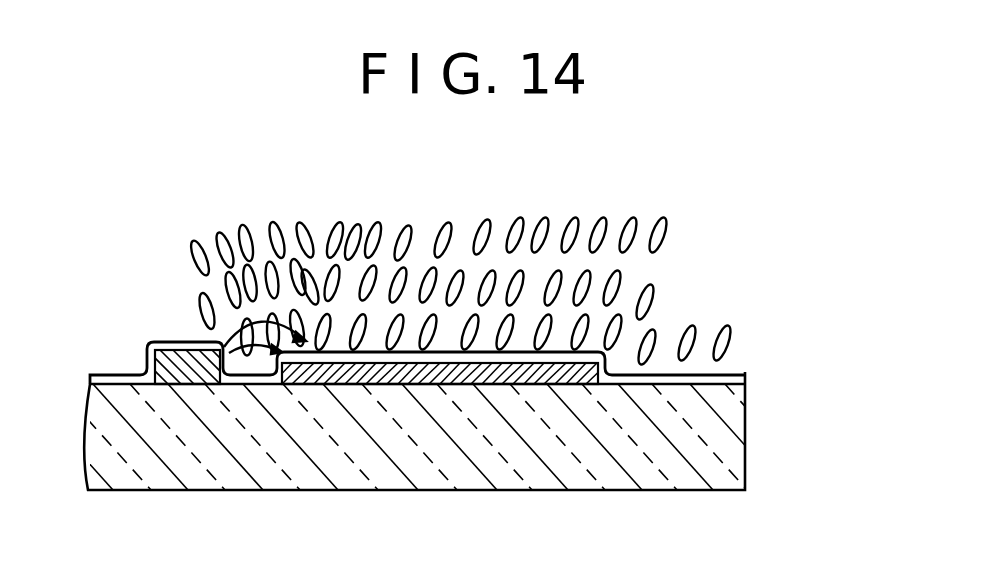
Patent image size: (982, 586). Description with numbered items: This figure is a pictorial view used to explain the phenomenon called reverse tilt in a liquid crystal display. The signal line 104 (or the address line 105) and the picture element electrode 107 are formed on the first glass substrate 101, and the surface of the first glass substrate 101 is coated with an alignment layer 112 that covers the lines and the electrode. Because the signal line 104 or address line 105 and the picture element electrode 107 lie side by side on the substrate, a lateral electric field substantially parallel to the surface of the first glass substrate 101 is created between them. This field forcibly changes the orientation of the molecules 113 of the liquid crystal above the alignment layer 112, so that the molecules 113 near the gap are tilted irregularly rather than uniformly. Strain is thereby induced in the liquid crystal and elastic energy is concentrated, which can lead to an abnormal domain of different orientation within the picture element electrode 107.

The first glass substrate 101 is at (710, 447).
The signal line 104 is at (194, 445).
The address line 105 is at (187, 378).
The picture element electrode 107 is at (527, 365).
The alignment layer 112 is at (735, 371).
The molecules of the liquid crystal 113 is at (452, 222).